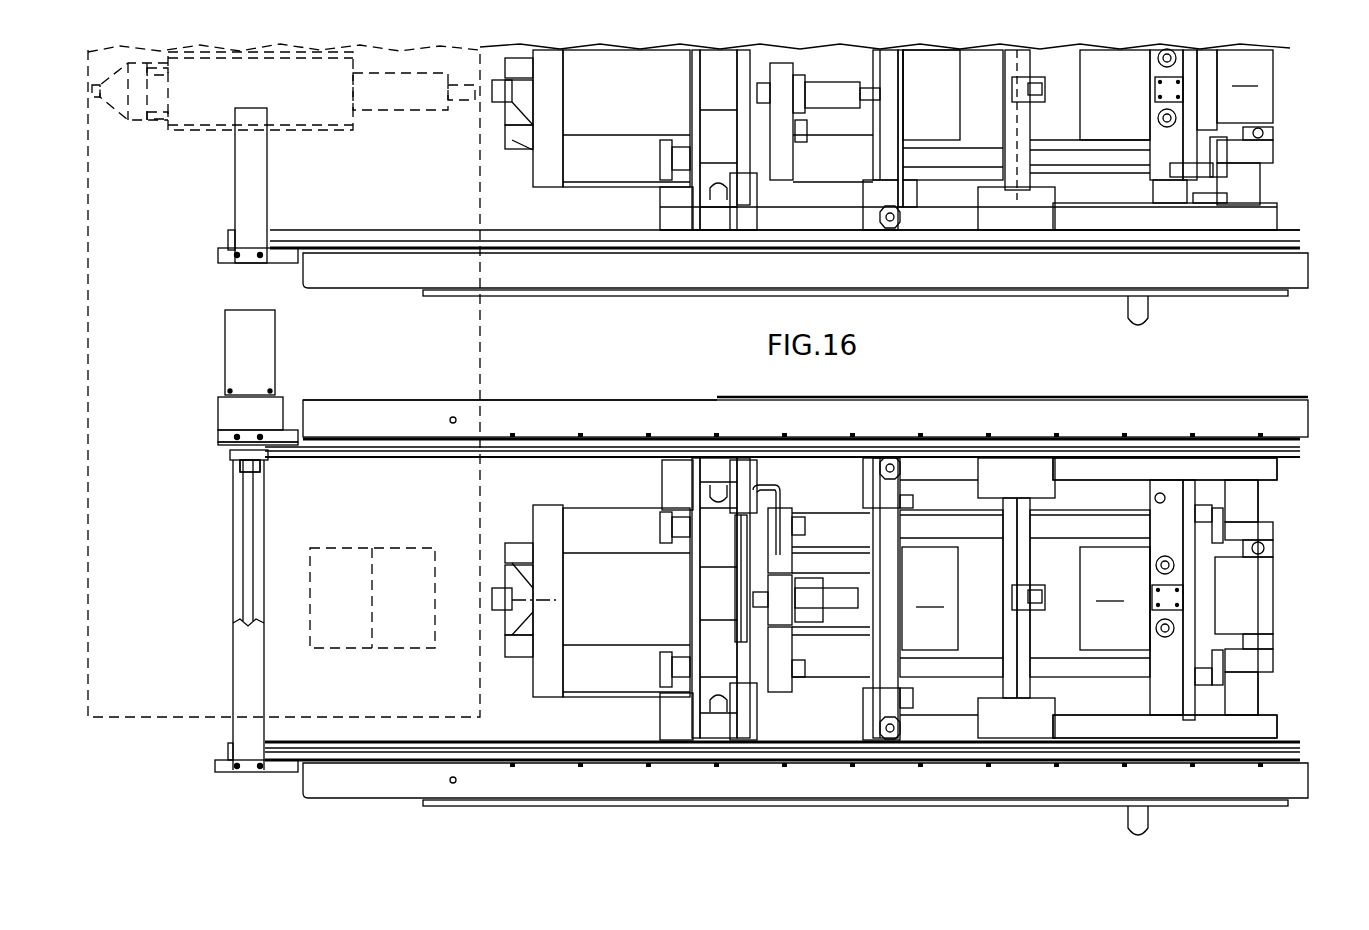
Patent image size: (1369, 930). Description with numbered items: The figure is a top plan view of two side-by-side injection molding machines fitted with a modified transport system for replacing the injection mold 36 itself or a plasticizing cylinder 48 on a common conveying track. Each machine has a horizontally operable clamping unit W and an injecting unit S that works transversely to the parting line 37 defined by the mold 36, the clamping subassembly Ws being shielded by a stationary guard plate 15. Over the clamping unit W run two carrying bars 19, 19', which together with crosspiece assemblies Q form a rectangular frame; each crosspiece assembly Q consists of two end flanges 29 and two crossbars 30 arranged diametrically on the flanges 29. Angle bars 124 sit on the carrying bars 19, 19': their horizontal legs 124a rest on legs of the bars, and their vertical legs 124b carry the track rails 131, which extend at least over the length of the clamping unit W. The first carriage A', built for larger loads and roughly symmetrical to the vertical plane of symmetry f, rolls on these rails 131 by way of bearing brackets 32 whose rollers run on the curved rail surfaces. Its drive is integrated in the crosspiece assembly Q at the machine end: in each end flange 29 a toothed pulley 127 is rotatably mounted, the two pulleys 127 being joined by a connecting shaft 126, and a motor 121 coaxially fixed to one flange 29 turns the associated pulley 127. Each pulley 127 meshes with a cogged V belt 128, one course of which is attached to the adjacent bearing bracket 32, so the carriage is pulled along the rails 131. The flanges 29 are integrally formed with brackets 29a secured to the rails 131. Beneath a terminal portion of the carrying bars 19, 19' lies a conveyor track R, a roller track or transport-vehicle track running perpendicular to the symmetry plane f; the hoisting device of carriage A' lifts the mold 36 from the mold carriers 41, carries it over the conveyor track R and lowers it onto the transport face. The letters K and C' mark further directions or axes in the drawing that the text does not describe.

The guard plate 15 is at (900, 620).
The carrying bar 19 is at (1165, 411).
The carrying bar 19' is at (1165, 790).
The end flange 29 is at (226, 462).
The bracket 29a is at (277, 437).
The crossbar 30 is at (225, 668).
The bearing bracket 32 is at (1032, 485).
The injection mold 36 is at (395, 632).
The parting line 37 is at (1077, 615).
The mold carrier 41 is at (1185, 560).
The plasticizing cylinder 48 is at (310, 110).
The motor 121 is at (235, 353).
The angle bar 124 is at (462, 806).
The horizontal leg 124a is at (673, 427).
The vertical leg 124b is at (627, 422).
The connecting shaft 126 is at (250, 555).
The pulley 127 is at (258, 465).
The cogged V belt 128 is at (878, 445).
The track rail 131 is at (1080, 442).
The conveyor track R is at (328, 272).
The direction K is at (434, 359).
The clamping unit W is at (592, 398).
The injecting unit S is at (1240, 398).
The crosspiece assembly Q is at (230, 574).
The plane of symmetry f is at (395, 600).
The clamping subassembly Ws is at (618, 578).
The first carriage A' is at (1053, 592).
The axis C' is at (1043, 578).